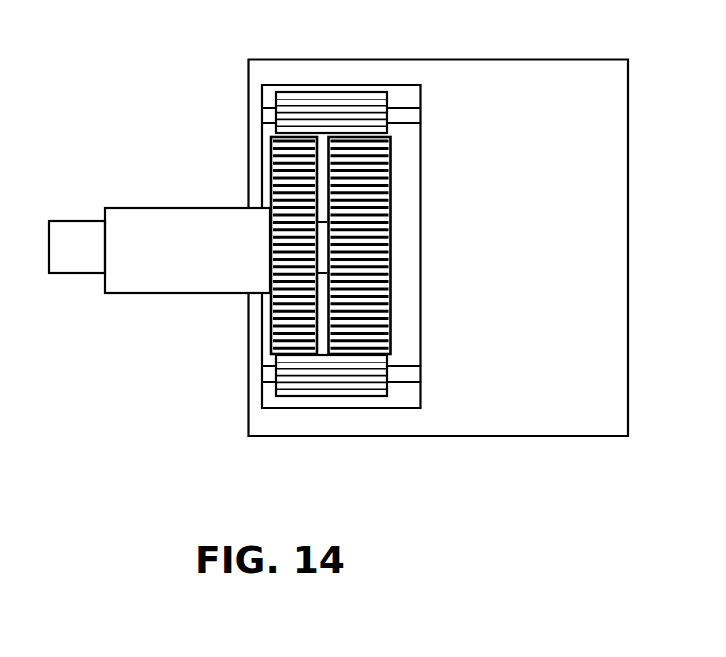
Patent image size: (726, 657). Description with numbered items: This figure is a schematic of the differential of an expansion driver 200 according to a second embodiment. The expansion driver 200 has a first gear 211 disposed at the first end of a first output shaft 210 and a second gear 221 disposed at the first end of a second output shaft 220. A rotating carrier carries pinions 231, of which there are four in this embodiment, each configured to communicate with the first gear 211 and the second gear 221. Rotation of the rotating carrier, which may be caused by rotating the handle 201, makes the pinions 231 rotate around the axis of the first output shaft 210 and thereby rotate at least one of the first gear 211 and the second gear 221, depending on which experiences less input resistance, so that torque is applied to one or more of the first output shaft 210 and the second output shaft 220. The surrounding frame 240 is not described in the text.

The expansion driver 200 is at (172, 86).
The handle 201 is at (515, 83).
The first output shaft 210 is at (82, 245).
The second output shaft 220 is at (158, 233).
The second gear 221 is at (290, 332).
The first gear 211 is at (375, 310).
The pinion 231 is at (330, 103).
The stator frame 240 is at (415, 84).